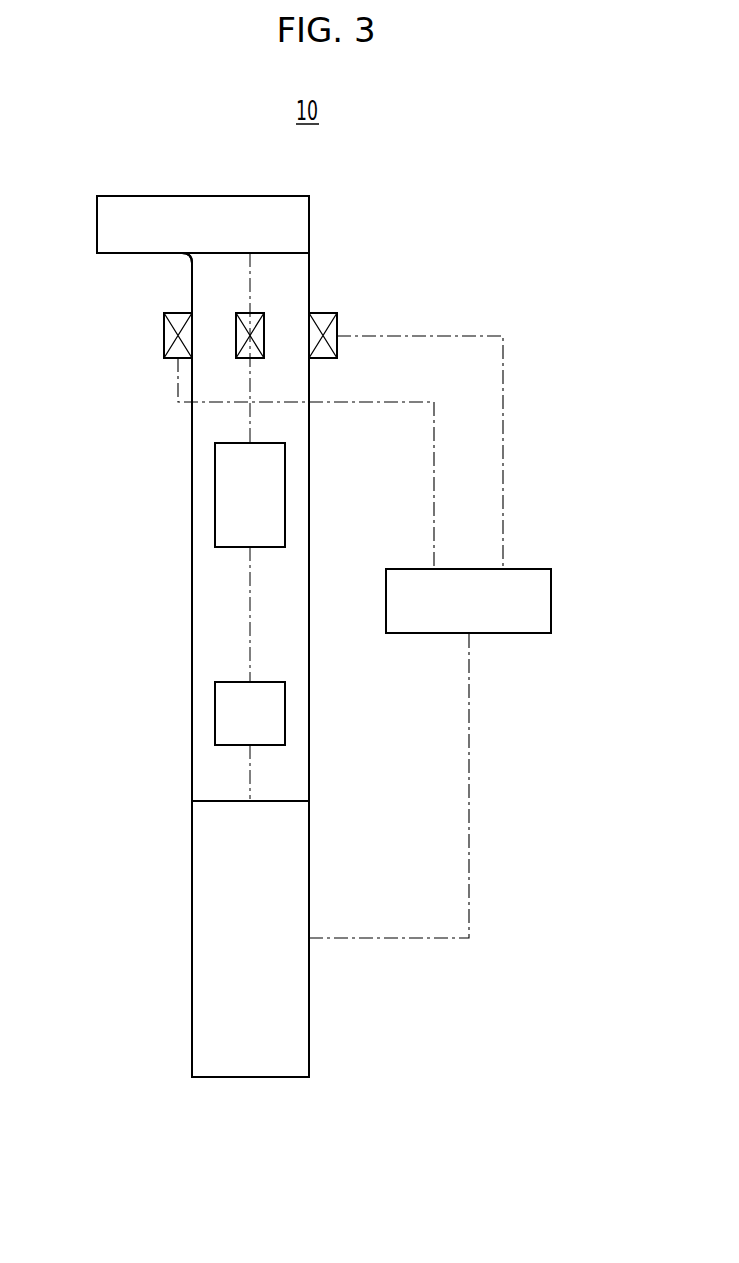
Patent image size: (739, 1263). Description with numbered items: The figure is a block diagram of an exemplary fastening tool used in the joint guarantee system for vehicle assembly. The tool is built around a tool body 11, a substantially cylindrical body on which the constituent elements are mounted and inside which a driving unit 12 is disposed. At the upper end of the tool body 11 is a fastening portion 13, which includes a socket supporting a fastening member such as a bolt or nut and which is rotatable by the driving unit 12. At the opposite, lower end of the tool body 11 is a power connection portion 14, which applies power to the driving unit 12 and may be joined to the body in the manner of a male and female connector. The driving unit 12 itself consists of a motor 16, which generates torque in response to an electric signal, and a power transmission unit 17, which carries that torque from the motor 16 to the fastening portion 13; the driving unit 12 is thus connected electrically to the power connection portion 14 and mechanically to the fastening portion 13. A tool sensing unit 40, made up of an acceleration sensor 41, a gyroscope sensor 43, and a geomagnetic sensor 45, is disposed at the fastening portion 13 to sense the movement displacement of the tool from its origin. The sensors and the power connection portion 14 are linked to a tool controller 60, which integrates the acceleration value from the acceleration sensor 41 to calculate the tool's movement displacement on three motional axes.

The tool body 11 is at (192, 552).
The driving unit 12 is at (215, 713).
The fastening portion 13 is at (97, 224).
The power connection portion 14 is at (192, 936).
The motor 16 is at (285, 711).
The power transmission unit 17 is at (215, 497).
The tool sensing unit 40 is at (280, 425).
The acceleration sensor 41 is at (236, 313).
The gyroscope sensor 43 is at (164, 335).
The geomagnetic sensor 45 is at (323, 358).
The tool controller 60 is at (551, 600).